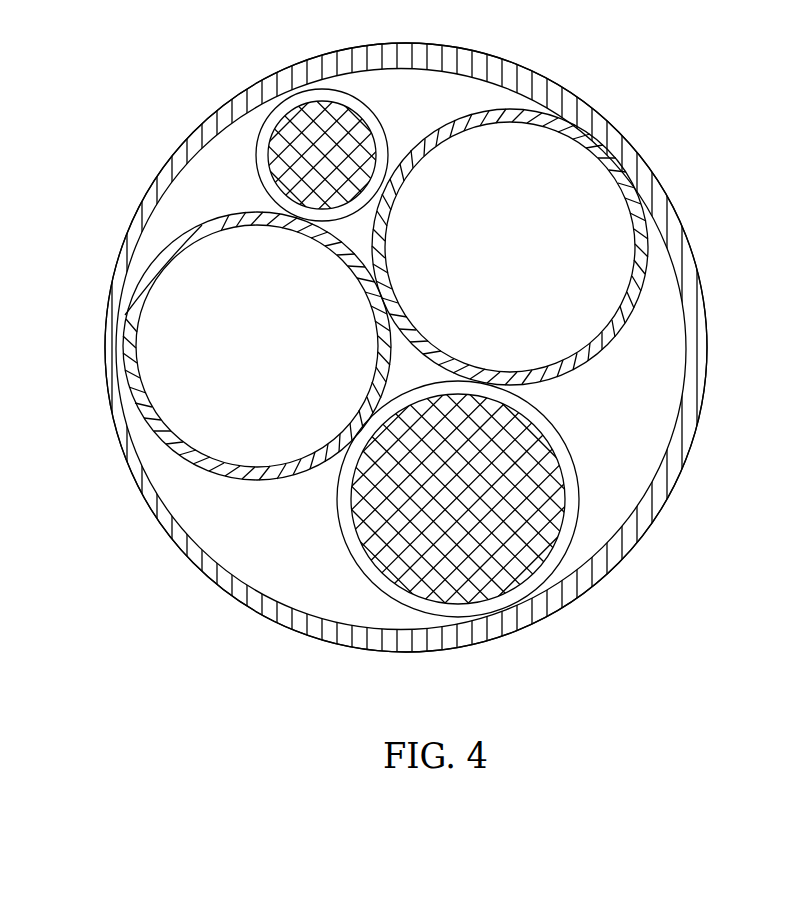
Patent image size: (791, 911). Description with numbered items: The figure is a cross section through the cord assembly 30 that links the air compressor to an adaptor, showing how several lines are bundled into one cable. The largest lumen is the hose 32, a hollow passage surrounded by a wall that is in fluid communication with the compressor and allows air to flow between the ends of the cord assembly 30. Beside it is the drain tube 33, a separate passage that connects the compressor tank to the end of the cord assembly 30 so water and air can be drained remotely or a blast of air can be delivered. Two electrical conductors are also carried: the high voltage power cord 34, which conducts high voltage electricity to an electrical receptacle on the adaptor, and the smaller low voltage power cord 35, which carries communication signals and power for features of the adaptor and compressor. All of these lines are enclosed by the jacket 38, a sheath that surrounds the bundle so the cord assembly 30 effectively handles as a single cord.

The cord assembly 30 is at (137, 84).
The hose 32 is at (178, 323).
The drain tube 33 is at (560, 165).
The high voltage power cord 34 is at (473, 583).
The low voltage power cord 35 is at (335, 110).
The jacket 38 is at (109, 347).